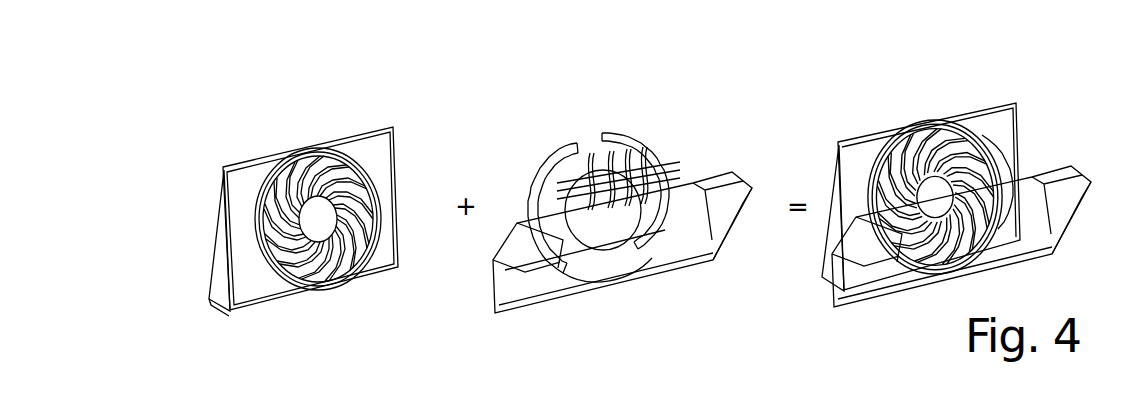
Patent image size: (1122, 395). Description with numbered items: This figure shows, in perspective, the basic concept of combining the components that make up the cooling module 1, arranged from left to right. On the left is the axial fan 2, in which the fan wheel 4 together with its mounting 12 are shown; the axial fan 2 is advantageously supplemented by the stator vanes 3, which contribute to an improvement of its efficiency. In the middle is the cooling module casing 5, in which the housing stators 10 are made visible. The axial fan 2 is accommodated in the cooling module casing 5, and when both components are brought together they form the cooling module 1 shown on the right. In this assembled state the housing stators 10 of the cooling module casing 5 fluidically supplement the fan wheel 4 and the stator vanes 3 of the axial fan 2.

The cooling module 1 is at (905, 116).
The axial fan 2 is at (273, 151).
The stator vanes 3 is at (350, 280).
The fan wheel 4 is at (308, 277).
The cooling module casing 5 is at (603, 147).
The housing stators 10 is at (621, 280).
The mounting 12 is at (218, 230).